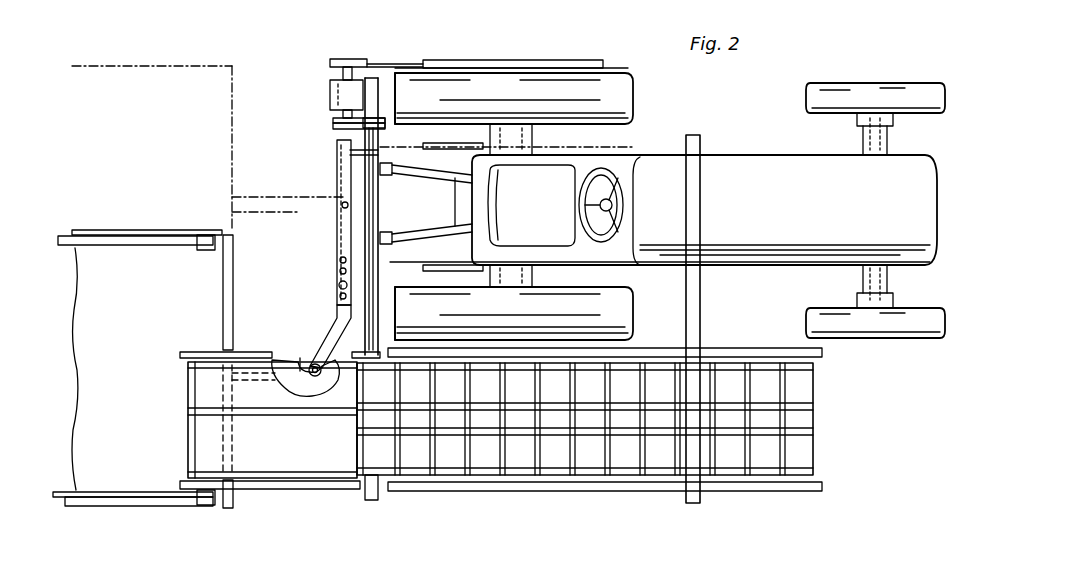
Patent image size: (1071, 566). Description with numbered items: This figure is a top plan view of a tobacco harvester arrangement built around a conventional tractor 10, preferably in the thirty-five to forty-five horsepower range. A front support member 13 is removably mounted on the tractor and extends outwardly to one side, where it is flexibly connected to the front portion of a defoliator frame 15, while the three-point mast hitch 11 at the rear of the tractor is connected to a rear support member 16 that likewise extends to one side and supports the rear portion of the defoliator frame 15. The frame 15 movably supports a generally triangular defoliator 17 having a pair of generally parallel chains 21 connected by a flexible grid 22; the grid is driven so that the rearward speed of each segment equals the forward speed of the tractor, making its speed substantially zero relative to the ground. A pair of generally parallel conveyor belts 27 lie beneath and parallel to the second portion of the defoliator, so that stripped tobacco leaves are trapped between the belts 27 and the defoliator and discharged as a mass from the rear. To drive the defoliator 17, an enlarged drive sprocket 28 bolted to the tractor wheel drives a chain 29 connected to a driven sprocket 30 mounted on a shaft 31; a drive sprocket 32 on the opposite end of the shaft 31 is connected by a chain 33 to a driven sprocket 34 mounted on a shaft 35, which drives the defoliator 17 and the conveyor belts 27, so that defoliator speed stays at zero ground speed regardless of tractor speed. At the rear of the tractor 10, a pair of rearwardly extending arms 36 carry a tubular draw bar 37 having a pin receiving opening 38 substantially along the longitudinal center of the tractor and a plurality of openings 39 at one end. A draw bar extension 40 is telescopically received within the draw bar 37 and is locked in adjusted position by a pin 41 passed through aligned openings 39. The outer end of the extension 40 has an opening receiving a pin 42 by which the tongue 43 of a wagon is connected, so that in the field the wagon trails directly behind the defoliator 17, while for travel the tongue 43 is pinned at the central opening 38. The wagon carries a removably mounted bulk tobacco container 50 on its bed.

The tractor 10 is at (870, 74).
The three-point mast hitch 11 is at (428, 180).
The front support member 13 is at (700, 302).
The defoliator frame 15 is at (491, 497).
The rear support member 16 is at (362, 496).
The defoliator 17 is at (630, 458).
The chains 21 is at (800, 370).
The flexible grid 22 is at (815, 422).
The conveyor belts 27 is at (196, 390).
The drive sprocket 28 is at (527, 62).
The chain 29 is at (400, 60).
The driven sprocket 30 is at (360, 58).
The shaft 31 is at (340, 78).
The drive sprocket 32 is at (335, 128).
The chain 33 is at (333, 125).
The driven sprocket 34 is at (386, 126).
The shaft 35 is at (370, 235).
The rearwardly extending arms 36 is at (452, 147).
The tubular draw bar 37 is at (337, 178).
The pin receiving opening 38 is at (340, 206).
The openings 39 is at (338, 260).
The draw bar extension 40 is at (340, 318).
The pin 41 is at (338, 286).
The pin 42 is at (313, 364).
The tongue 43 is at (286, 362).
The bulk tobacco container 50 is at (132, 268).